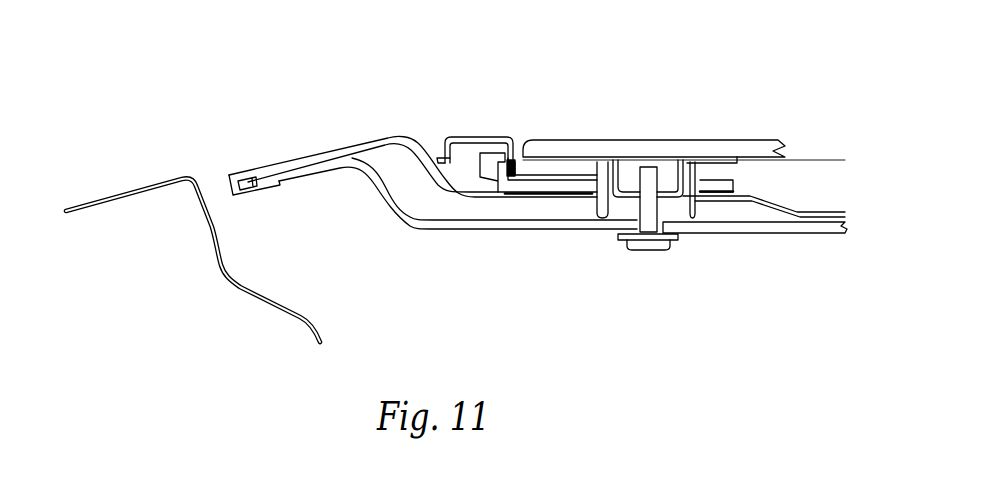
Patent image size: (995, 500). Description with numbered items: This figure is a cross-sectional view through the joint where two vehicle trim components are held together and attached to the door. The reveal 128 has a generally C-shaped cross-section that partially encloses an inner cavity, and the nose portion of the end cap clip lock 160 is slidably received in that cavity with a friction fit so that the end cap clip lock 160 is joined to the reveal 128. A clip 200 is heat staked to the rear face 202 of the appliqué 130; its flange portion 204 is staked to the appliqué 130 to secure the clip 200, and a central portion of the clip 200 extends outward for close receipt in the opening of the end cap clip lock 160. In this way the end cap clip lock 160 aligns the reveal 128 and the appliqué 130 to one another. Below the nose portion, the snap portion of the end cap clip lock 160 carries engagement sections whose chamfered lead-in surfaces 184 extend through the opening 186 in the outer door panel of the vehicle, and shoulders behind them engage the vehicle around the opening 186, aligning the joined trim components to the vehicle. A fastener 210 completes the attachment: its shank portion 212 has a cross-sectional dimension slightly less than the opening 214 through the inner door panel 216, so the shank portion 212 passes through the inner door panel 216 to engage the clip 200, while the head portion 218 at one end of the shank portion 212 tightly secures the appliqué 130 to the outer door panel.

The reveal 128 is at (462, 137).
The flange portion 204 is at (580, 167).
The end cap clip lock 160 is at (498, 180).
The chamfered lead-in surfaces 184 is at (600, 192).
The opening 186 is at (680, 183).
The appliqué 130 is at (745, 150).
The rear face 202 is at (730, 163).
The clip 200 is at (665, 182).
The shank portion 212 is at (645, 183).
The fastener 210 is at (665, 281).
The opening 214 is at (680, 228).
The head portion 218 is at (655, 242).
The inner door panel 216 is at (772, 208).